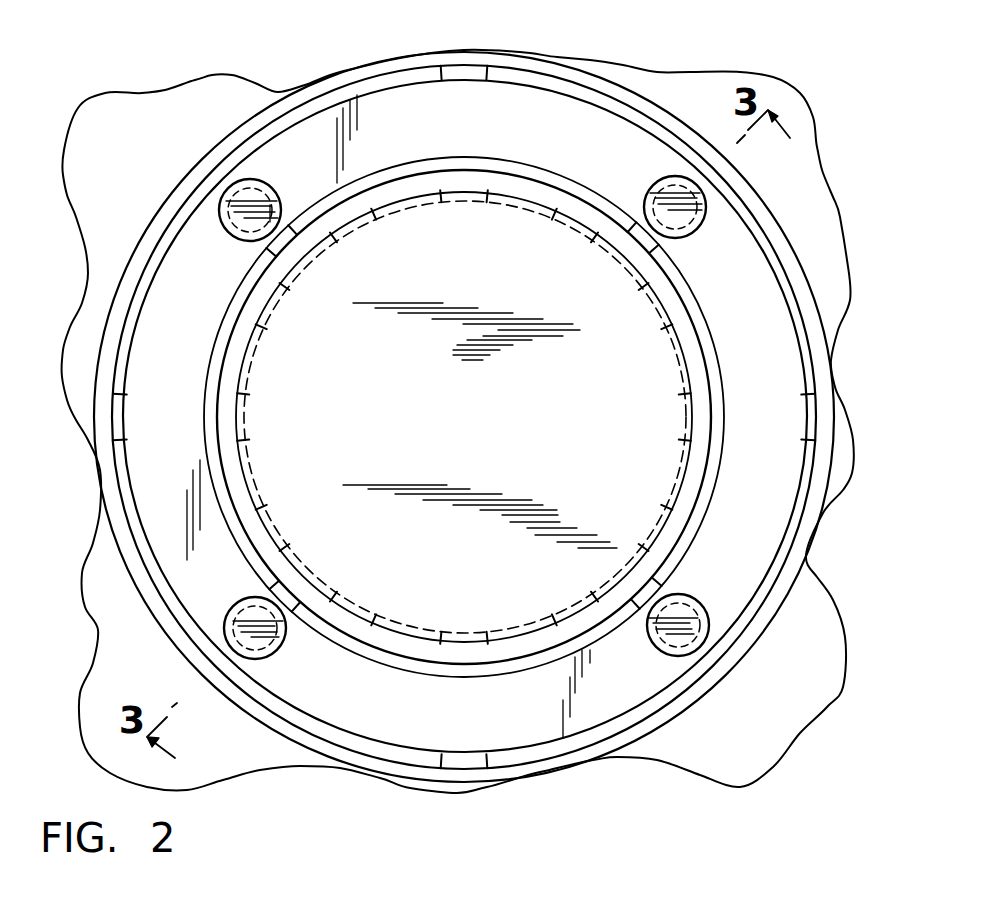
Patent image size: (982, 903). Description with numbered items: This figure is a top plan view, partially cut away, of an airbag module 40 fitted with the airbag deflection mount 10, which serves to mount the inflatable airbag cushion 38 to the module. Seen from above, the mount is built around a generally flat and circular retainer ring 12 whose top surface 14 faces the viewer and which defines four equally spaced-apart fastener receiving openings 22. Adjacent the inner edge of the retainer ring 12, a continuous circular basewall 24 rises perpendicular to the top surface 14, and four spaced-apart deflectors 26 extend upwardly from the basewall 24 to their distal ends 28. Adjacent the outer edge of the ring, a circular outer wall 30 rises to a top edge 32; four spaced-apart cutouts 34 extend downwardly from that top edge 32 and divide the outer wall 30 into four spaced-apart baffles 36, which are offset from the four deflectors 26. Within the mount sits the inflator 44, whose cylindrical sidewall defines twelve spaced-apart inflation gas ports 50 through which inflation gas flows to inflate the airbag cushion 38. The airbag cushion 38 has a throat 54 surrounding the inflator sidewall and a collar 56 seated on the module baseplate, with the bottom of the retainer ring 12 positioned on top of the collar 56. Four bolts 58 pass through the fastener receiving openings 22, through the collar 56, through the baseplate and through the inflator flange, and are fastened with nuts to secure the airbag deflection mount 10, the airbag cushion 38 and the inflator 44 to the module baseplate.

The airbag deflection mount 10 is at (797, 268).
The retainer ring 12 is at (767, 388).
The top surface 14 is at (787, 363).
The fastener receiving openings 22 is at (268, 182).
The basewall 24 is at (285, 238).
The deflectors 26 is at (518, 163).
The distal ends 28 is at (487, 160).
The outer wall 30 is at (826, 466).
The top edge 32 is at (378, 80).
The cutouts 34 is at (443, 73).
The baffles 36 is at (513, 65).
The airbag cushion 38 is at (830, 602).
The airbag module 40 is at (747, 36).
The inflator 44 is at (657, 362).
The inflation gas ports 50 is at (350, 232).
The throat 54 is at (828, 695).
The collar 56 is at (690, 702).
The bolts 58 is at (282, 205).